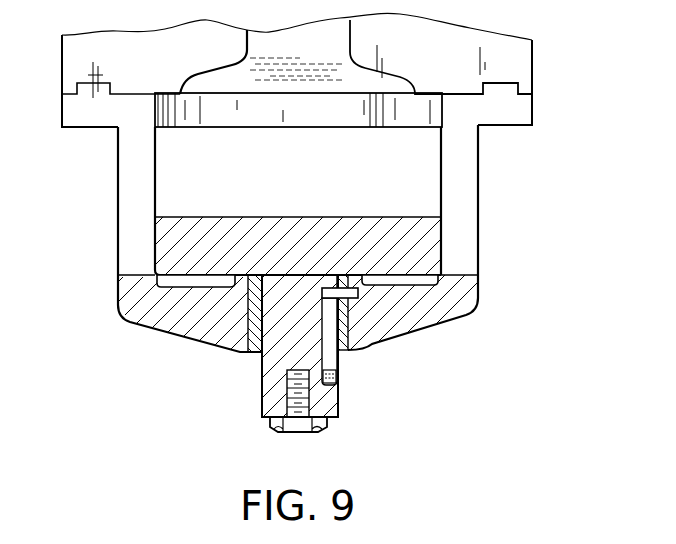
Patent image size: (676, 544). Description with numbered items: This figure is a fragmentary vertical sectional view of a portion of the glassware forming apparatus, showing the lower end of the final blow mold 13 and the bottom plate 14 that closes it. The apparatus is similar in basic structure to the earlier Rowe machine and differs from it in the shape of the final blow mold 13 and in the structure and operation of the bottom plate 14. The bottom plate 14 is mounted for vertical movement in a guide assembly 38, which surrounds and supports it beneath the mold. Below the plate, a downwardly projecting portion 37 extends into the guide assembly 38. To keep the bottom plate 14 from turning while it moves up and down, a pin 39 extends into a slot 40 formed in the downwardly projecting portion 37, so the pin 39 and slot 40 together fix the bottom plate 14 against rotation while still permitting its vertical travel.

The final blow mold 13 is at (522, 57).
The bottom plate 14 is at (425, 243).
The downwardly projecting portion 37 is at (277, 365).
The guide assembly 38 is at (463, 285).
The pin 39 is at (330, 293).
The slot 40 is at (335, 368).